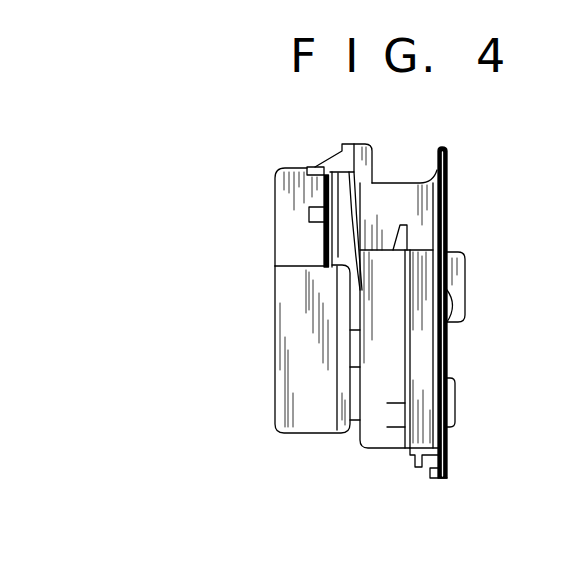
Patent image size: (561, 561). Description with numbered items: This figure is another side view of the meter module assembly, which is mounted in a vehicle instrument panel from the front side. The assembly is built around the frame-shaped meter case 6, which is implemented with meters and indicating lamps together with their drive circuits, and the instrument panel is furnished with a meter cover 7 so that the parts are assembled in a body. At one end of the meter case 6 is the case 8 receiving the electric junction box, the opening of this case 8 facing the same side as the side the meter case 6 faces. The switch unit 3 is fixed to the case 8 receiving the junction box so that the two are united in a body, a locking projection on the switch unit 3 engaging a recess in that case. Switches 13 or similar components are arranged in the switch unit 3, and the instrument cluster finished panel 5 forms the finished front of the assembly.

The switch unit 3 is at (385, 450).
The instrument cluster finished panel 5 is at (448, 186).
The meter case 6 is at (288, 170).
The meter cover 7 is at (340, 233).
The case receiving the electric junction box 8 is at (302, 437).
The switches 13 is at (467, 300).